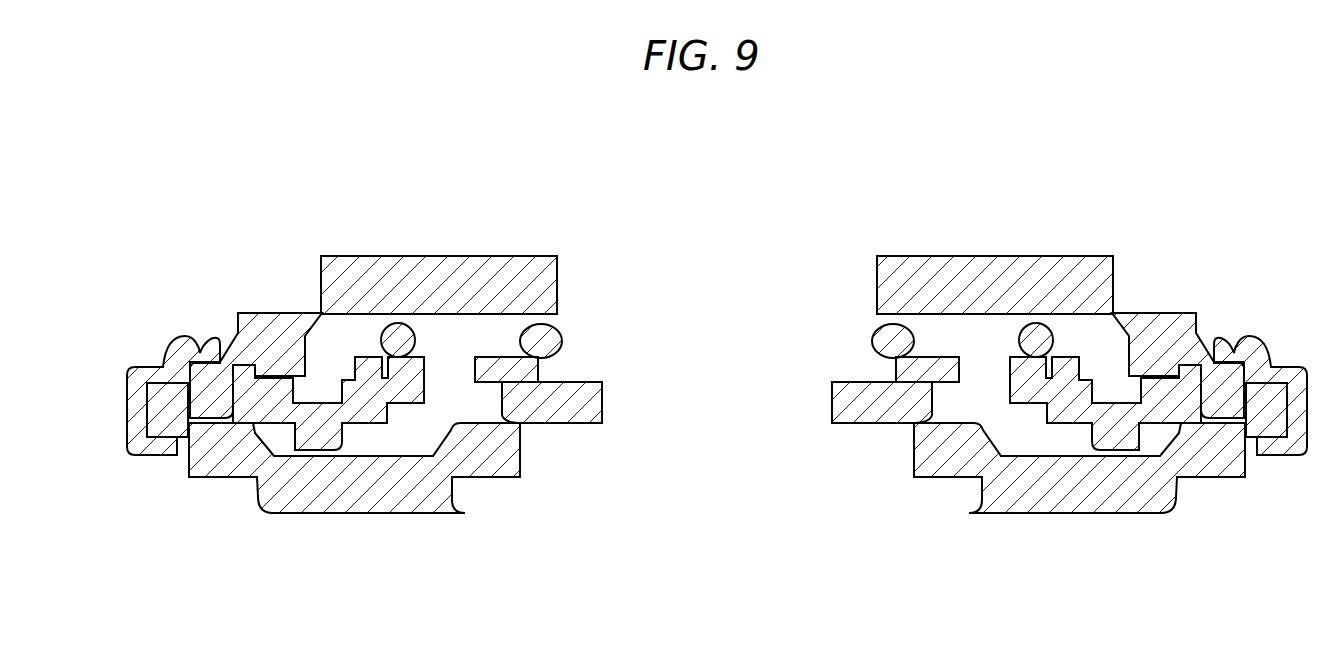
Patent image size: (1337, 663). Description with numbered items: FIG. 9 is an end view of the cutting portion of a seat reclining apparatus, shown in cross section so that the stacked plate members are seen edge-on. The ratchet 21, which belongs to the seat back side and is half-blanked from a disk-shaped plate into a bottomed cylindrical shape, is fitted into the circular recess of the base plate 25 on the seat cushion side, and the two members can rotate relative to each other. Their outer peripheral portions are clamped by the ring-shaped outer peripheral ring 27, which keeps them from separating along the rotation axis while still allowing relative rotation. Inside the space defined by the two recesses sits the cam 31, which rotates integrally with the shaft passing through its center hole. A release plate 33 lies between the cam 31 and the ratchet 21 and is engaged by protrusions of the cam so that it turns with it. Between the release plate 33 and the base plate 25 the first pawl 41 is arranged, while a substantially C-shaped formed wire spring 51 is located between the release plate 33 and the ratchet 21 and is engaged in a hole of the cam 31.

The ratchet 21 is at (509, 262).
The base plate 25 is at (375, 514).
The outer peripheral ring 27 is at (141, 367).
The cam 31 is at (578, 424).
The release plate 33 is at (540, 367).
The first pawl 41 is at (260, 393).
The formed wire spring 51 is at (403, 330).